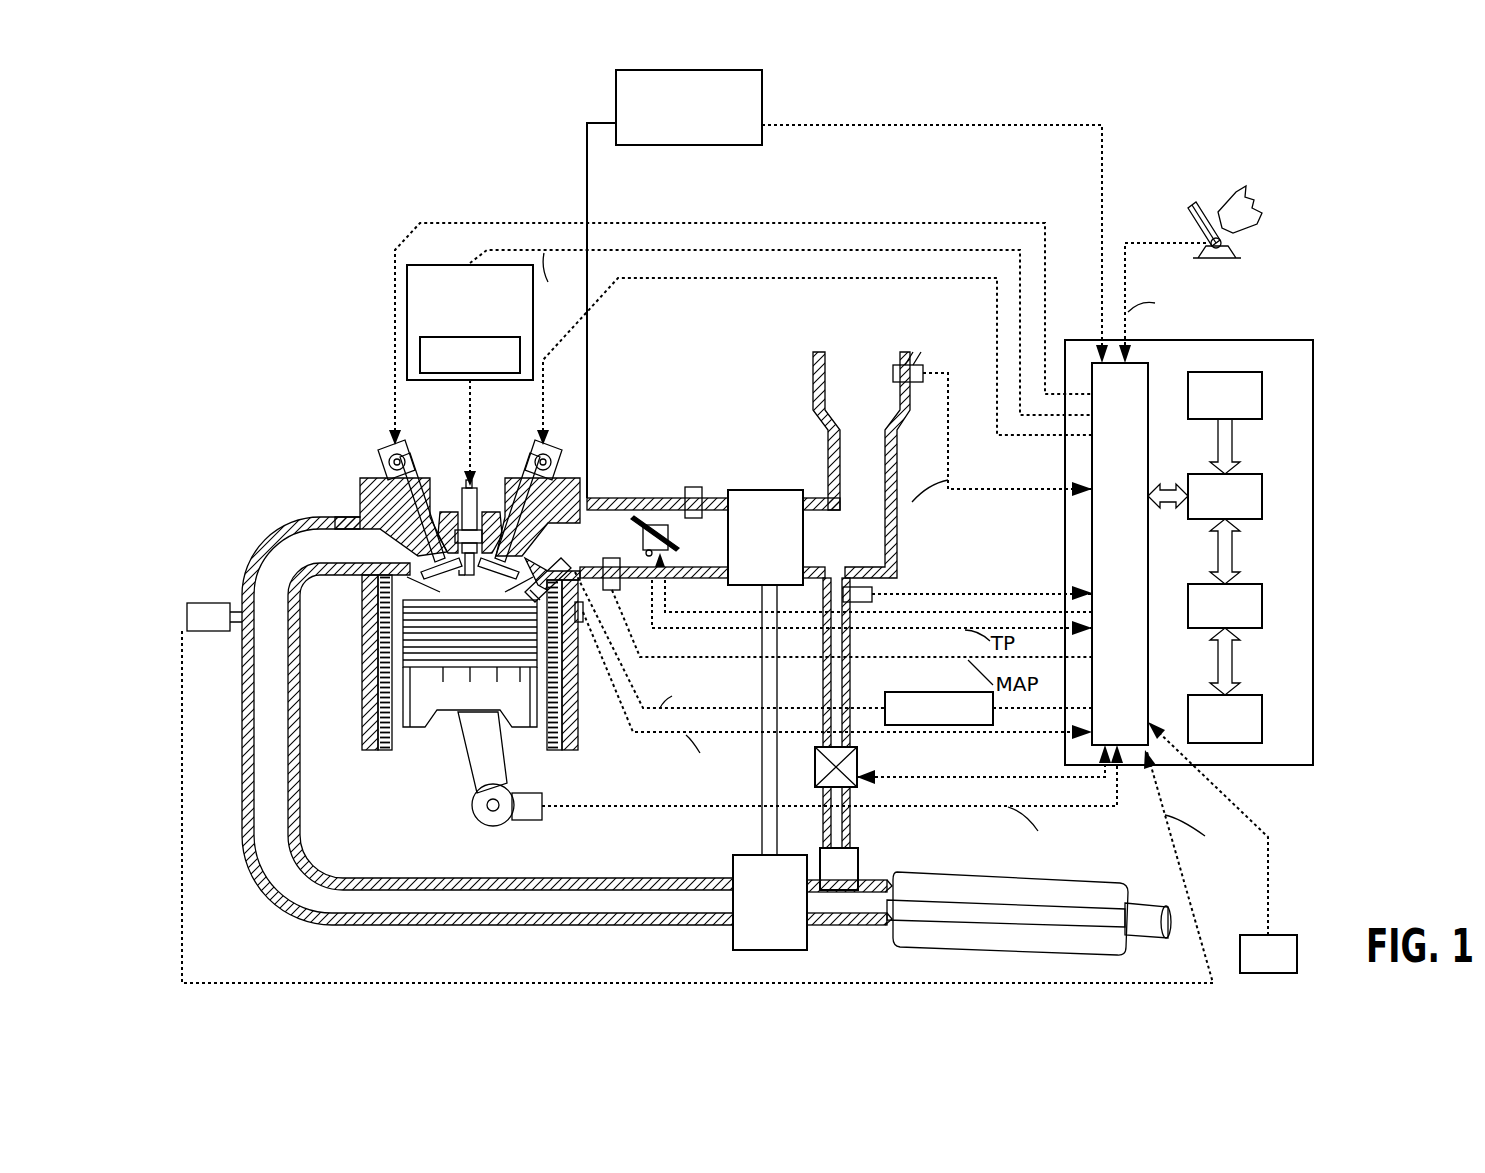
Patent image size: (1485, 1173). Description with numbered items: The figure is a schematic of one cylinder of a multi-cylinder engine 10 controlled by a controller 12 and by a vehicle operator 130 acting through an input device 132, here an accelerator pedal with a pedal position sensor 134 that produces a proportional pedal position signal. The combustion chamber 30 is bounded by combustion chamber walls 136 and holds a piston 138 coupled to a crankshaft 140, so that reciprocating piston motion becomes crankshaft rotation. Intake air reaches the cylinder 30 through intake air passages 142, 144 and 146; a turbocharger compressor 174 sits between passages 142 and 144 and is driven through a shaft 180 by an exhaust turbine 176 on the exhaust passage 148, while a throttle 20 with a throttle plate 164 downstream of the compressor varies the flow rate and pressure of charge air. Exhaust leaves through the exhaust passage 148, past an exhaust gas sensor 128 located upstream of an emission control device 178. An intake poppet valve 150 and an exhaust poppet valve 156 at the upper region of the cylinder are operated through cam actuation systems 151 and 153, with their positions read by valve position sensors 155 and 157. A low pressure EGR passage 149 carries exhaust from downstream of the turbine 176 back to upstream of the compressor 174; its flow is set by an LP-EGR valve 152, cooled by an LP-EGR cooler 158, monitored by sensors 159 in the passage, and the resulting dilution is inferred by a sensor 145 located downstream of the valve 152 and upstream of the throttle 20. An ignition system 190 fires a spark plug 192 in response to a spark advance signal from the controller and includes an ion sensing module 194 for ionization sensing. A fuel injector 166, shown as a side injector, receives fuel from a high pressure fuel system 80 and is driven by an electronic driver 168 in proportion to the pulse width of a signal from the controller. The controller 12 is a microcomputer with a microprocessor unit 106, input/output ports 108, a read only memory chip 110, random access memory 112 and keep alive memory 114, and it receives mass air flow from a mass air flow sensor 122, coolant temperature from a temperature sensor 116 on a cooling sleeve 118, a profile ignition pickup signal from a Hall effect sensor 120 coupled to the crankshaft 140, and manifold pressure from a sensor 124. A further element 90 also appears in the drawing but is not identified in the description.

The engine 10 is at (176, 158).
The controller 12 is at (1234, 538).
The throttle 20 is at (657, 517).
The combustion chamber 30 is at (465, 589).
The high pressure fuel system 80 is at (764, 88).
The sensor 90 is at (1278, 967).
The microprocessor unit 106 is at (1264, 497).
The input/output ports 108 is at (1150, 375).
The read only memory chip 110 is at (1264, 395).
The random access memory 112 is at (1264, 607).
The keep alive memory 114 is at (1264, 721).
The temperature sensor 116 is at (585, 665).
The cooling sleeve 118 is at (579, 625).
The Hall effect sensor 120 is at (532, 822).
The mass air flow sensor 122 is at (918, 365).
The manifold pressure sensor 124 is at (622, 604).
The exhaust gas sensor 128 is at (187, 606).
The vehicle operator 130 is at (1235, 265).
The input device 132 is at (1196, 218).
The pedal position sensor 134 is at (1225, 243).
The combustion chamber walls 136 is at (378, 752).
The piston 138 is at (452, 700).
The crankshaft 140 is at (486, 822).
The intake air passage 142 is at (877, 403).
The intake manifold 144 is at (722, 548).
The sensor 145 is at (699, 487).
The intake air passage 146 is at (593, 548).
The exhaust passage 148 is at (317, 556).
The LP-EGR passage 149 is at (851, 833).
The intake poppet valve 150 is at (510, 560).
The cam actuation system 151 is at (535, 446).
The LP-EGR valve 152 is at (816, 770).
The cam actuation system 153 is at (403, 446).
The valve position sensor 155 is at (556, 482).
The exhaust poppet valve 156 is at (422, 562).
The valve position sensor 157 is at (380, 458).
The LP-EGR cooler 158 is at (859, 868).
The sensors 159 is at (850, 587).
The throttle plate 164 is at (632, 518).
The fuel injector 166 is at (808, 624).
The electronic driver 168 is at (906, 692).
The compressor 174 is at (752, 490).
The exhaust turbine 176 is at (732, 940).
The emission control device 178 is at (1085, 873).
The shaft 180 is at (760, 825).
The ignition system 190 is at (704, 354).
The spark plug 192 is at (463, 517).
The ion sensing module 194 is at (420, 358).